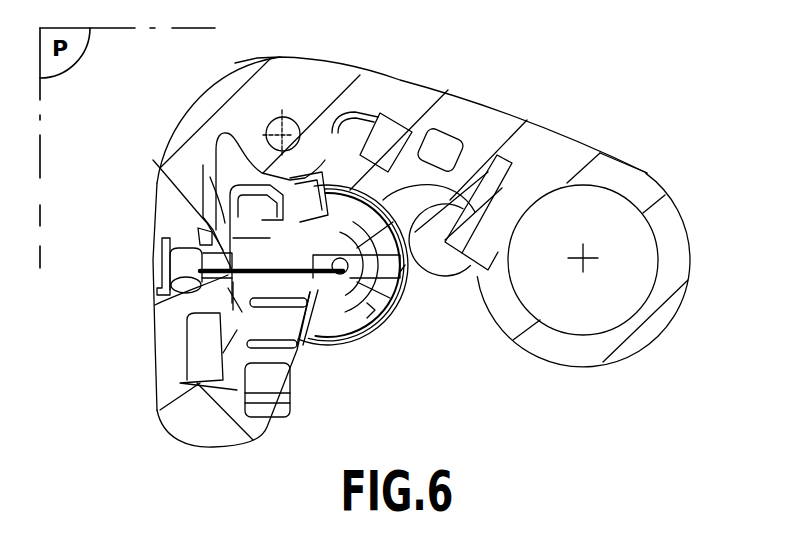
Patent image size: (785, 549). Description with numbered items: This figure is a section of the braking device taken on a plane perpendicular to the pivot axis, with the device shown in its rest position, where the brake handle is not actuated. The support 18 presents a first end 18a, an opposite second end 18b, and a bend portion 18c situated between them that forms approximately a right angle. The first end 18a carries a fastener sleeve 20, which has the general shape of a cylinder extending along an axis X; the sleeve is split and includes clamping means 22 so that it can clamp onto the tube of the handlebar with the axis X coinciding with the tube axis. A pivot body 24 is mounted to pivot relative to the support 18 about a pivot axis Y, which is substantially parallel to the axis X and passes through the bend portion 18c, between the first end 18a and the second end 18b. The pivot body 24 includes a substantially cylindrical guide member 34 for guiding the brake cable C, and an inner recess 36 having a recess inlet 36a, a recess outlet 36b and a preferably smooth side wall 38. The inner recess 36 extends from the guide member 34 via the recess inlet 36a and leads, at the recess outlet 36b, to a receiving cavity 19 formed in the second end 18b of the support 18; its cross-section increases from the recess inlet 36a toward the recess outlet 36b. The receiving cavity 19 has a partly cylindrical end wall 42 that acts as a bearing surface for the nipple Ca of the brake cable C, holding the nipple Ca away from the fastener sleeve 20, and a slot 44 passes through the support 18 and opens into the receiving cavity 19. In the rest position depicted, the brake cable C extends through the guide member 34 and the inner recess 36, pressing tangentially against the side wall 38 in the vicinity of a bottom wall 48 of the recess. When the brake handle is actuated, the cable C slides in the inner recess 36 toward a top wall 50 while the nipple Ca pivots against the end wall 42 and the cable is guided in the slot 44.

The support 18 is at (433, 80).
The first end 18a is at (642, 174).
The second end 18b is at (157, 373).
The bend portion 18c is at (257, 58).
The receiving cavity 19 is at (176, 283).
The fastener sleeve 20 is at (678, 184).
The clamping means 22 is at (450, 283).
The pivot body 24 is at (226, 450).
The guide member 34 is at (392, 330).
The inner recess 36 is at (270, 316).
The recess inlet 36a is at (332, 252).
The recess outlet 36b is at (207, 215).
The side wall 38 is at (367, 308).
The end wall 42 is at (208, 241).
The slot 44 is at (183, 312).
The bottom wall 48 is at (281, 353).
The top wall 50 is at (210, 177).
The brake cable C is at (185, 302).
The nipple Ca is at (165, 265).
The axis X is at (587, 257).
The pivot axis Y is at (281, 117).